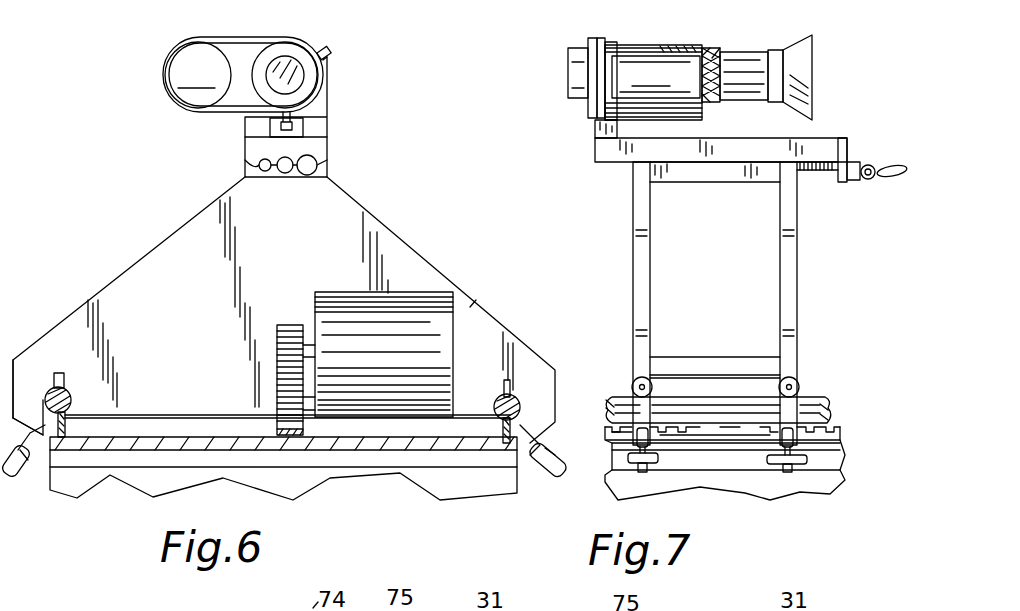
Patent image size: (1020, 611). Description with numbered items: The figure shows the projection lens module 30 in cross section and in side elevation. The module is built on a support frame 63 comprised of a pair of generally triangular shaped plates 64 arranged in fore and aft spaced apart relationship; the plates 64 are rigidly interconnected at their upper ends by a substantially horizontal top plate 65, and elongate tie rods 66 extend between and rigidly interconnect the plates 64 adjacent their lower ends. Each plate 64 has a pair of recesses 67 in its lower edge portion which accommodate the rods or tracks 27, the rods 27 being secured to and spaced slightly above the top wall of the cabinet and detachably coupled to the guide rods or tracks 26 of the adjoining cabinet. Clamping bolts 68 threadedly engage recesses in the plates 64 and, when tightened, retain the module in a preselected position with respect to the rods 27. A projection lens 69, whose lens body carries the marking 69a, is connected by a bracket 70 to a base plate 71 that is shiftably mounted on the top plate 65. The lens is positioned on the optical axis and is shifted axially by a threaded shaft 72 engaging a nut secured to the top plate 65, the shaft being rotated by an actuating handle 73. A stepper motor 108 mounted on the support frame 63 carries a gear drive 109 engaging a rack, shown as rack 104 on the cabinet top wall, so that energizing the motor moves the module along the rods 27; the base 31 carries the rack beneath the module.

In FIG. 6, the guide rods or tracks 26 is at (520, 407).
In FIG. 6, the rods or tracks 27 is at (66, 392).
In FIG. 6, the projection lens module 30 is at (358, 177).
In FIG. 7, the projection lens module 30 is at (618, 202).
In FIG. 7, the base rail 31 is at (725, 448).
In FIG. 6, the support frame 63 is at (427, 258).
In FIG. 7, the support frame 63 is at (711, 303).
In FIG. 6, the plates 64 is at (470, 307).
In FIG. 7, the plates 64 is at (637, 290).
In FIG. 7, the top plate 65 is at (715, 177).
In FIG. 7, the tie rods 66 is at (680, 360).
In FIG. 6, the recesses 67 is at (73, 403).
In FIG. 6, the clamping bolts 68 is at (37, 443).
In FIG. 7, the clamping bolts 68 is at (643, 467).
In FIG. 6, the projection lens 69 is at (312, 75).
In FIG. 7, the projection lens 69 is at (710, 50).
In FIG. 6, the camera lens housing 69a is at (196, 77).
In FIG. 7, the camera lens housing 69a is at (651, 75).
In FIG. 7, the bracket 70 is at (602, 38).
In FIG. 6, the base plate 71 is at (328, 128).
In FIG. 7, the base plate 71 is at (707, 147).
In FIG. 7, the threaded shaft 72 is at (820, 173).
In FIG. 7, the actuating handle 73 is at (885, 178).
In FIG. 6, the drive rack 104 is at (303, 430).
In FIG. 6, the stepper motor 108 is at (333, 300).
In FIG. 6, the gear drive 109 is at (277, 397).